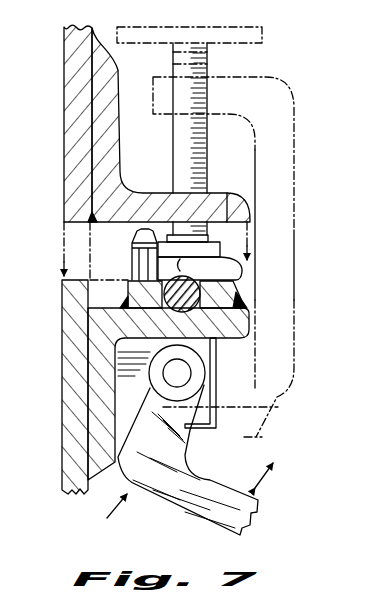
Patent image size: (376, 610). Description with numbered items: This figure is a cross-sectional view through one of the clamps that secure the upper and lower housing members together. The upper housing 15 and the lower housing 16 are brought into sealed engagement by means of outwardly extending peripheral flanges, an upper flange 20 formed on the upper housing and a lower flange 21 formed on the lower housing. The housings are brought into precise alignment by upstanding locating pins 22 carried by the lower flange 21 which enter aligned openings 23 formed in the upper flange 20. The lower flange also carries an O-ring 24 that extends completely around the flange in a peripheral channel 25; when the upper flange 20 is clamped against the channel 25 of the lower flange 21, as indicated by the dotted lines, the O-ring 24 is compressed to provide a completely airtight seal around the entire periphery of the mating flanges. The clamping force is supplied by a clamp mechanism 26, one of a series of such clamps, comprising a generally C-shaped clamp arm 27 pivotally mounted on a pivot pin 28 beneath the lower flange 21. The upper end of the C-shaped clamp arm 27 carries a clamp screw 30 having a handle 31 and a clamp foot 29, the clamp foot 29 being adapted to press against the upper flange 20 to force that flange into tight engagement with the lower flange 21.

The upper housing 15 is at (62, 30).
The lower housing 16 is at (60, 492).
The upper flange 20 is at (228, 205).
The lower flange 21 is at (228, 342).
The locating pins 22 is at (139, 262).
The aligned openings 23 is at (134, 197).
The O-ring 24 is at (200, 266).
The peripheral channel 25 is at (202, 306).
The clamp mechanism 26 is at (110, 514).
The C-shaped clamp arm 27 is at (208, 480).
The pivot pin 28 is at (172, 385).
The clamp foot 29 is at (248, 251).
The clamp screw 30 is at (208, 70).
The handle 31 is at (262, 31).